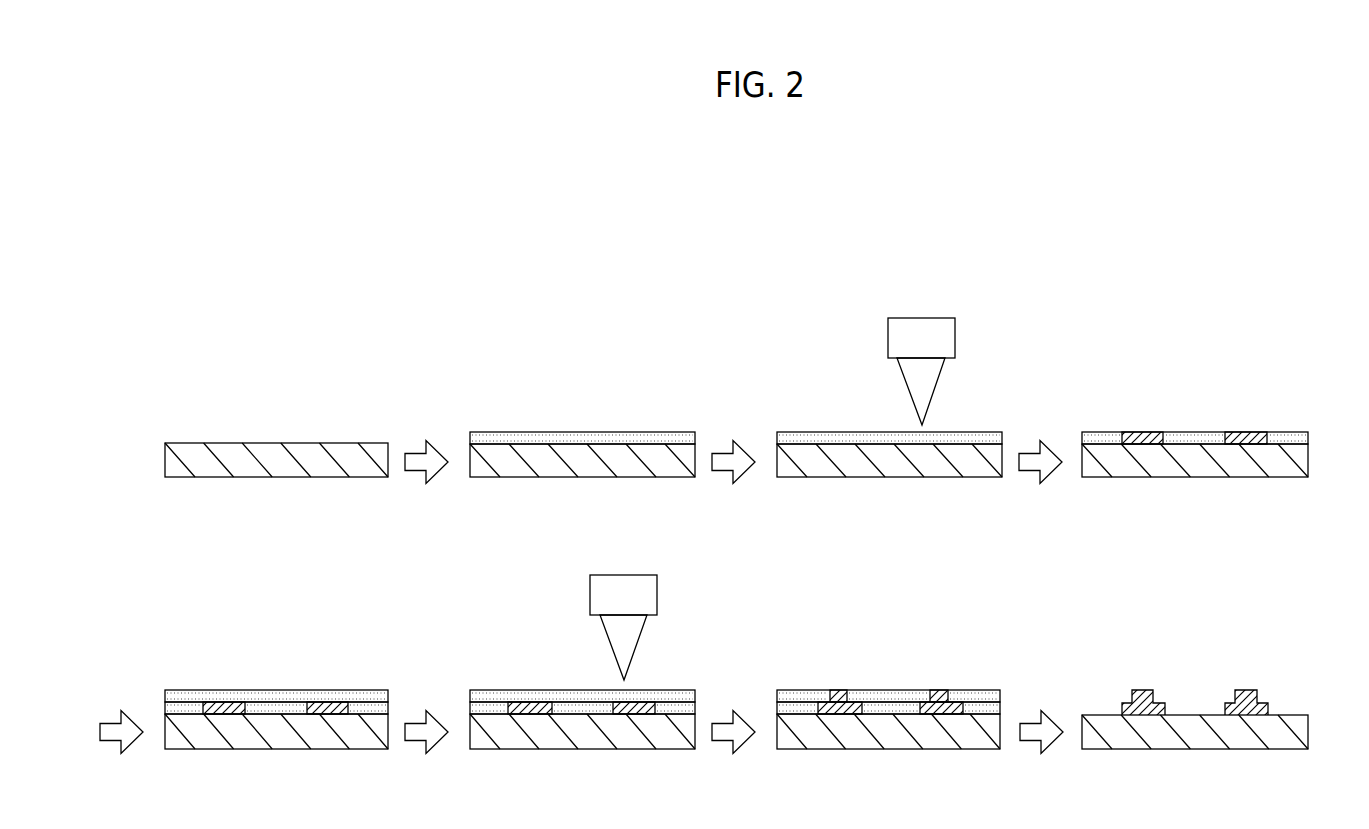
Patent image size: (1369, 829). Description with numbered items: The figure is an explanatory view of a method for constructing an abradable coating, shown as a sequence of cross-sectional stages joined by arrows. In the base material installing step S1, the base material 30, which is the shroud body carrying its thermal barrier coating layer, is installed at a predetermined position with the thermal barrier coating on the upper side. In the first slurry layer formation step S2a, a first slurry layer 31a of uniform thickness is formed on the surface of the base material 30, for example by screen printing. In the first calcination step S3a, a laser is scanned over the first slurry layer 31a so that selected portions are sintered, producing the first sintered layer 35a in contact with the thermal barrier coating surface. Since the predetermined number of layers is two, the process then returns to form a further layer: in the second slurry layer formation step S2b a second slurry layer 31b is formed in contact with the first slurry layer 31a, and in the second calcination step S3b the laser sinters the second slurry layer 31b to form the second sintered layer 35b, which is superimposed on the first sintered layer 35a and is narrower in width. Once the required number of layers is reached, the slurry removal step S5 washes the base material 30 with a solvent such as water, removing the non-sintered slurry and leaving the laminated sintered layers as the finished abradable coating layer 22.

The base material 30 is at (318, 443).
The first slurry layer 31a is at (635, 416).
The second slurry layer 31b is at (319, 690).
The first sintered layer 35a is at (1245, 433).
The second sintered layer 35b is at (940, 690).
The abradable coating layer 22 is at (1292, 698).
The base material installing step S1 is at (276, 397).
The first slurry layer formation step S2a is at (582, 397).
The first calcination step S3a is at (913, 397).
The second slurry layer formation step S2b is at (276, 661).
The second calcination step S3b is at (584, 661).
The slurry removal step S5 is at (1225, 661).